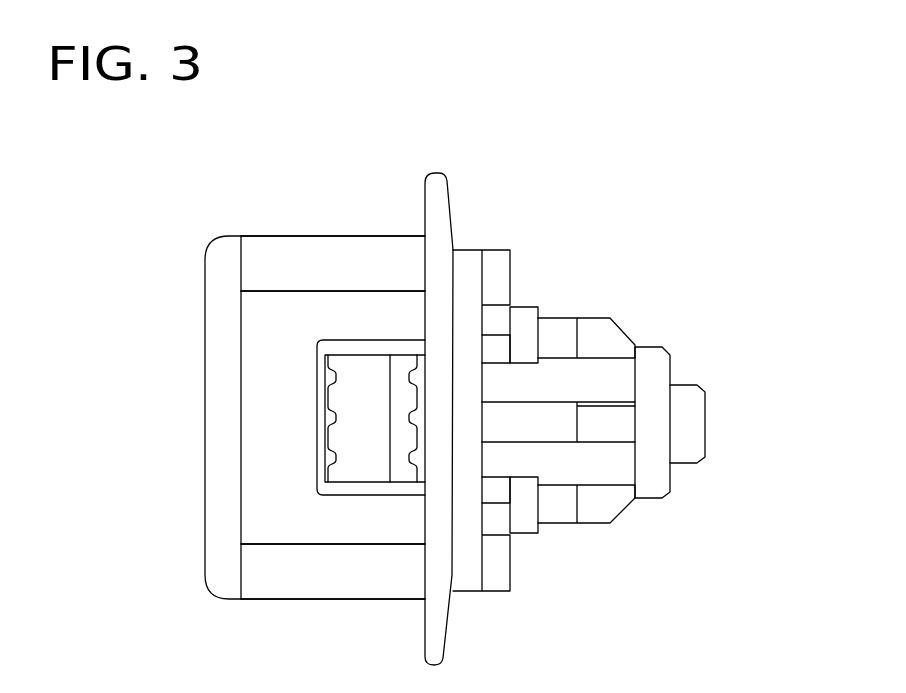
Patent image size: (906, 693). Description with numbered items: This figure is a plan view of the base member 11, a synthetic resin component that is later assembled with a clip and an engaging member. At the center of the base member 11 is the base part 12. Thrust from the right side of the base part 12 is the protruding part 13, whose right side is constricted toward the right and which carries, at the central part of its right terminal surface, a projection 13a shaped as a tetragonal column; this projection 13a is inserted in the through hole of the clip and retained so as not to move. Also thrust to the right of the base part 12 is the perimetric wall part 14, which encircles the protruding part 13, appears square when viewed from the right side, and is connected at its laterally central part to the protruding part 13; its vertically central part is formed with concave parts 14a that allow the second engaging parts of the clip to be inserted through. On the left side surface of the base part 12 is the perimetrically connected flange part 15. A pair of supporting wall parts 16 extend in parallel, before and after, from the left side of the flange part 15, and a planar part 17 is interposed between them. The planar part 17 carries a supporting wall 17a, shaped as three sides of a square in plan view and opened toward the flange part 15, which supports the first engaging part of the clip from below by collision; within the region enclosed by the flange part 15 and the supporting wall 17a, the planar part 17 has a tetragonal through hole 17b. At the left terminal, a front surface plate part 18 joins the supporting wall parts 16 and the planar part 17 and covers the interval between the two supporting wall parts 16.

The base member 11 is at (647, 512).
The base part 12 is at (463, 578).
The protruding part 13 is at (637, 375).
The projection 13a is at (687, 410).
The perimetric wall part 14 is at (488, 318).
The concave part 14a is at (495, 372).
The flange part 15 is at (443, 210).
The supporting wall part 16 is at (302, 267).
The planar part 17 is at (253, 488).
The supporting wall 17a is at (363, 348).
The through hole 17b is at (350, 403).
The front surface plate part 18 is at (220, 343).